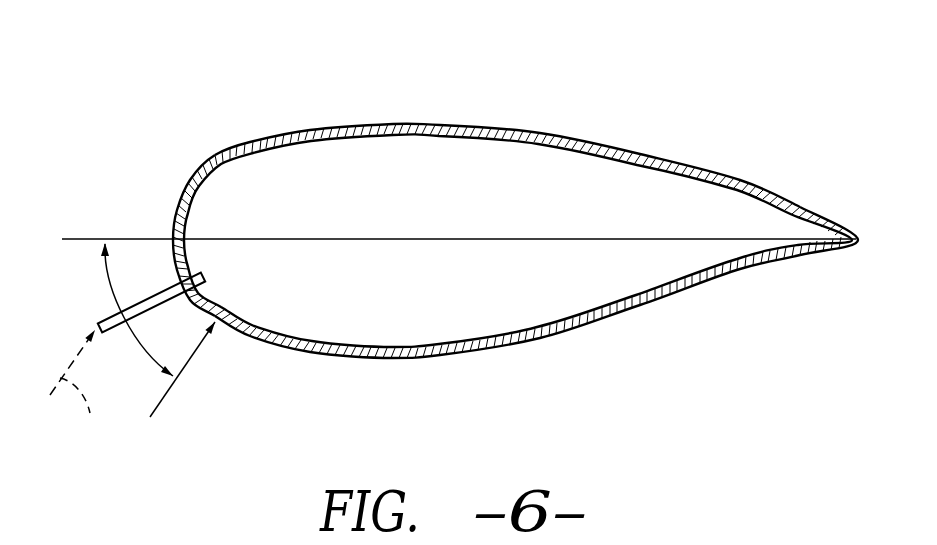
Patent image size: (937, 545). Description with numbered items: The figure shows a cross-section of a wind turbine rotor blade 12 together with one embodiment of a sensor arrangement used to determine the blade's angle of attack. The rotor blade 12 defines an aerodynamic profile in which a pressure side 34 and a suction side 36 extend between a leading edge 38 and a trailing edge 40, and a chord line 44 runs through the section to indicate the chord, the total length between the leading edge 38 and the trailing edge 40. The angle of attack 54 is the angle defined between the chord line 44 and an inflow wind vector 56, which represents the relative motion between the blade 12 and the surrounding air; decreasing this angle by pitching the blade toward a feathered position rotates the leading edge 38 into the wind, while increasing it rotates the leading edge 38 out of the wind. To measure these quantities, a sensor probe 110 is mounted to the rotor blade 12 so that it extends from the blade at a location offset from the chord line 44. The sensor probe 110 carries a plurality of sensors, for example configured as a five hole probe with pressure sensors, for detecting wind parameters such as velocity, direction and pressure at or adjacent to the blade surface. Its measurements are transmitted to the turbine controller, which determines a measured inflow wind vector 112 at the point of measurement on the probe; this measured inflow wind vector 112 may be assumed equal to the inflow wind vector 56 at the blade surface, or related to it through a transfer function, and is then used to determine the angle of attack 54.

The rotor blade 12 is at (511, 217).
The pressure side 34 is at (375, 360).
The suction side 36 is at (408, 122).
The leading edge 38 is at (172, 233).
The trailing edge 40 is at (861, 240).
The chord line 44 is at (427, 238).
The angle of attack 54 is at (108, 291).
The inflow wind vector 56 is at (158, 402).
The sensor probe 110 is at (150, 296).
The measured inflow wind vector 112 is at (85, 393).